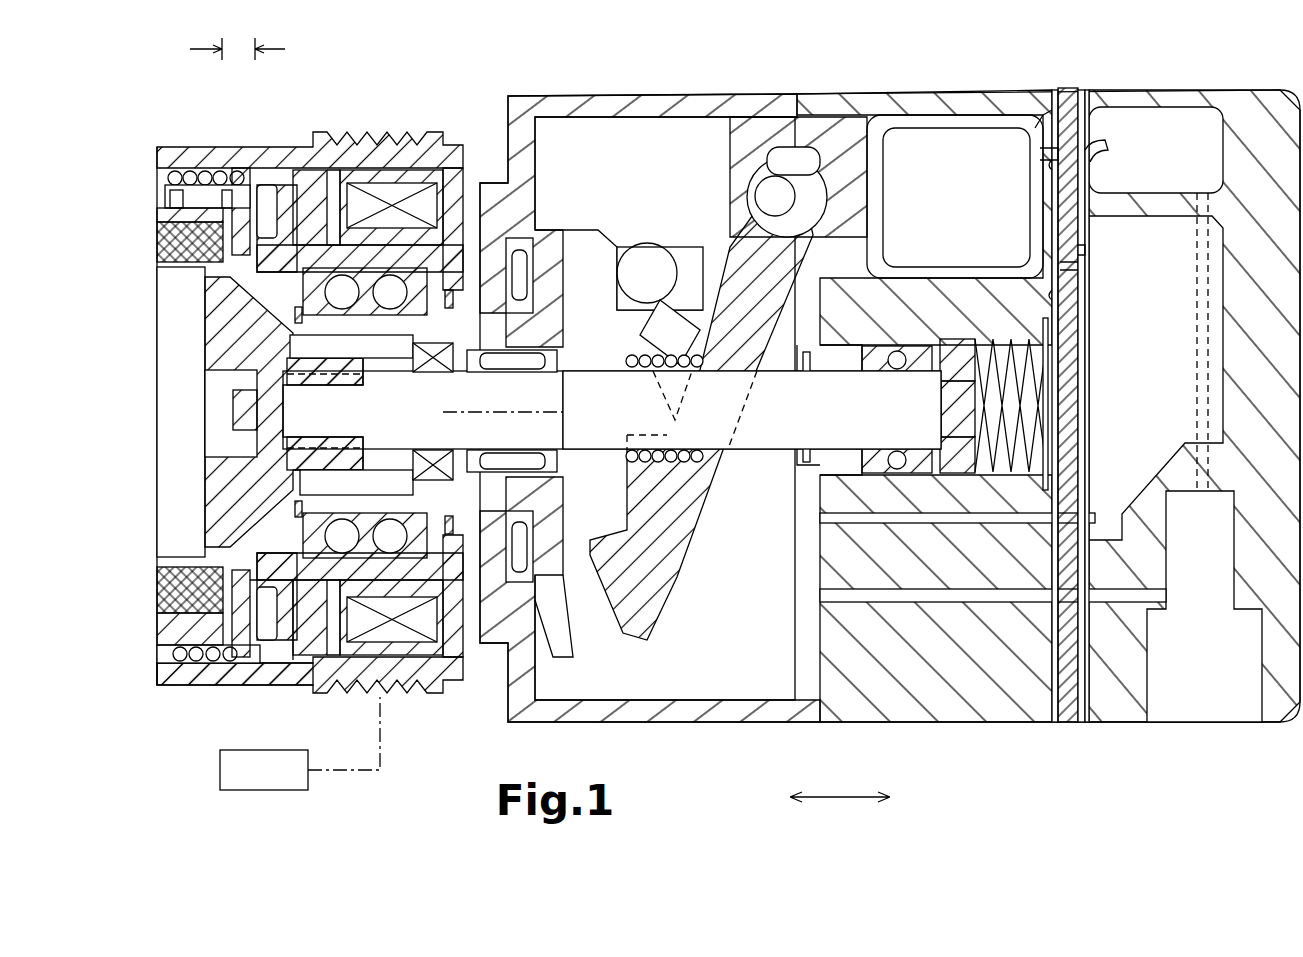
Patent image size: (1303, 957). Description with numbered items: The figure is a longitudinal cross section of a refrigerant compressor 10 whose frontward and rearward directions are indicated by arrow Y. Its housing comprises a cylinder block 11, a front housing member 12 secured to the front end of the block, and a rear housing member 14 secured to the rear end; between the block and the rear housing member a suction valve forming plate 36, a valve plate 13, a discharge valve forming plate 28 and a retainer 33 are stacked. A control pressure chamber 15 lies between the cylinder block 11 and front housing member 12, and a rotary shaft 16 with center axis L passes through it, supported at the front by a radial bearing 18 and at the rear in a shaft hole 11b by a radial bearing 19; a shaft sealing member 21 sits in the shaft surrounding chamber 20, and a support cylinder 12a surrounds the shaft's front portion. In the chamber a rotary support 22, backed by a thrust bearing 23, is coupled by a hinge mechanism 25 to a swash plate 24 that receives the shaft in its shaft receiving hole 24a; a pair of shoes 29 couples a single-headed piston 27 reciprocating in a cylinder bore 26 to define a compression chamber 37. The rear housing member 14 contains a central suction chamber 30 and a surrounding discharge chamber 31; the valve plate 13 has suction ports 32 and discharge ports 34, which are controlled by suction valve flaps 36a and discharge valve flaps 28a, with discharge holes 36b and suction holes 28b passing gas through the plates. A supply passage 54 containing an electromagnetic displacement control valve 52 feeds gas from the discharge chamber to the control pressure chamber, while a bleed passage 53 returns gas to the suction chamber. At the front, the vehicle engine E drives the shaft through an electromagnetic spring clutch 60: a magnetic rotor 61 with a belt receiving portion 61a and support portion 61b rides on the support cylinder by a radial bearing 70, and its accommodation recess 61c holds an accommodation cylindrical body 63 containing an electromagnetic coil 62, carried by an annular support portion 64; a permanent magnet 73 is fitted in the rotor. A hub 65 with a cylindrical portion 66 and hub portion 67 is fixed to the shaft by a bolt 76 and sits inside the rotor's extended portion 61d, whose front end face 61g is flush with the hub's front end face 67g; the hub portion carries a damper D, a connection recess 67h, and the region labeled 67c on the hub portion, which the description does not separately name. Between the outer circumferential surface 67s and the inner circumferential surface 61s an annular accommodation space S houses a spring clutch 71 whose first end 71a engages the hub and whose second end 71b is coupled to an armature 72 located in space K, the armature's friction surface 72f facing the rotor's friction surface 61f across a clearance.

The refrigerant compressor 10 is at (1038, 735).
The cylinder block 11 is at (858, 94).
The shaft hole 11b is at (842, 460).
The front housing member 12 is at (600, 96).
The support cylinder 12a is at (296, 314).
The valve plate 13 is at (1067, 362).
The rear housing member 14 is at (1255, 90).
The control pressure chamber 15 is at (726, 675).
The rotary shaft 16 is at (762, 449).
The radial bearing 18 is at (502, 372).
The radial bearing 19 is at (897, 473).
The shaft surrounding chamber 20 is at (470, 472).
The shaft sealing member 21 is at (413, 468).
The rotary support 22 is at (575, 655).
The thrust bearing 23 is at (525, 270).
The swash plate 24 is at (675, 604).
The shaft receiving hole 24a is at (710, 375).
The hinge mechanism 25 is at (653, 228).
The cylinder bore 26 is at (930, 115).
The single-headed piston 27 is at (750, 117).
The discharge valve forming plate 28 is at (1068, 88).
The discharge valve flap 28a is at (1108, 148).
The suction hole 28b is at (1085, 268).
The shoe 29 is at (765, 203).
The suction chamber 30 is at (1136, 400).
The discharge chamber 31 is at (1174, 162).
The suction port 32 is at (1088, 250).
The retainer 33 is at (1088, 90).
The discharge port 34 is at (1040, 150).
The suction valve forming plate 36 is at (1054, 90).
The suction valve flap 36a is at (1058, 295).
The discharge hole 36b is at (1050, 168).
The compression chamber 37 is at (1040, 110).
The electromagnetic displacement control valve 52 is at (1250, 494).
The bleed passage 53 is at (1008, 523).
The supply passage 54 is at (1210, 290).
The electromagnetic spring clutch 60 is at (289, 379).
The rotor 61 is at (462, 132).
The belt receiving portion 61a is at (400, 693).
The support portion 61b is at (480, 640).
The accommodation recess 61c is at (328, 693).
The extended portion 61d is at (180, 150).
The friction surface 61f is at (265, 185).
The front end face 61g is at (157, 160).
The inner circumferential surface 61s is at (236, 178).
The electromagnetic coil 62 is at (395, 185).
The accommodation cylindrical body 63 is at (455, 175).
The annular support portion 64 is at (450, 308).
The hub 65 is at (157, 525).
The cylindrical portion 66 is at (340, 352).
The hub portion 67 is at (157, 632).
The damper 67c is at (160, 600).
The front end face 67g is at (165, 215).
The connection recess 67h is at (165, 245).
The outer circumferential surface 67s is at (160, 652).
The radial bearing 70 is at (320, 535).
The spring clutch 71 is at (195, 685).
The first end 71a is at (165, 195).
The second end 71b is at (258, 185).
The armature 72 is at (215, 690).
The friction surface 72f is at (262, 655).
The permanent magnet 73 is at (318, 182).
The bolt 76 is at (233, 412).
The damper D is at (157, 575).
The vehicle engine E is at (220, 770).
The space K is at (240, 46).
The center axis L is at (572, 428).
The accommodation space S is at (160, 670).
The arrow Y is at (843, 797).